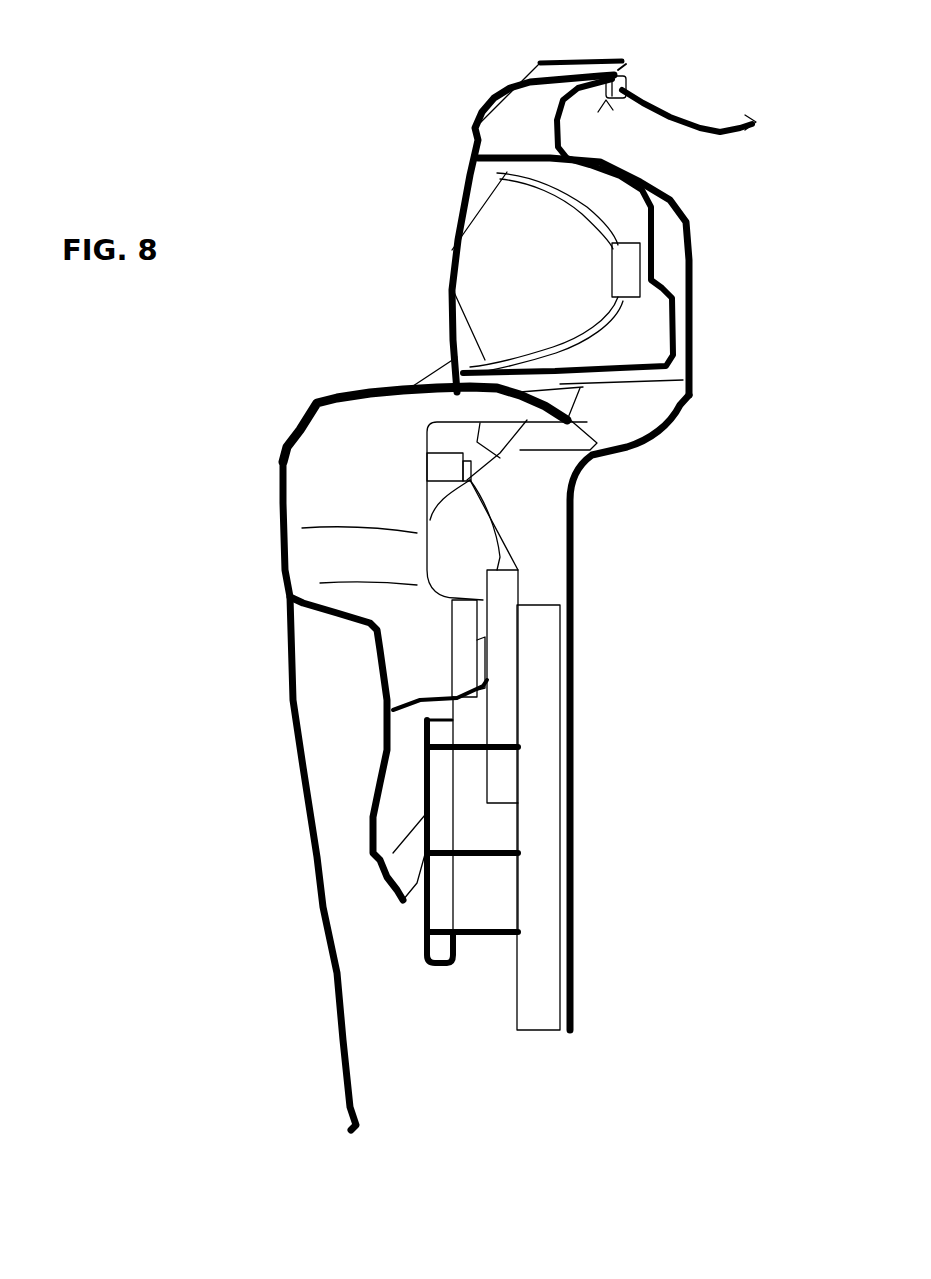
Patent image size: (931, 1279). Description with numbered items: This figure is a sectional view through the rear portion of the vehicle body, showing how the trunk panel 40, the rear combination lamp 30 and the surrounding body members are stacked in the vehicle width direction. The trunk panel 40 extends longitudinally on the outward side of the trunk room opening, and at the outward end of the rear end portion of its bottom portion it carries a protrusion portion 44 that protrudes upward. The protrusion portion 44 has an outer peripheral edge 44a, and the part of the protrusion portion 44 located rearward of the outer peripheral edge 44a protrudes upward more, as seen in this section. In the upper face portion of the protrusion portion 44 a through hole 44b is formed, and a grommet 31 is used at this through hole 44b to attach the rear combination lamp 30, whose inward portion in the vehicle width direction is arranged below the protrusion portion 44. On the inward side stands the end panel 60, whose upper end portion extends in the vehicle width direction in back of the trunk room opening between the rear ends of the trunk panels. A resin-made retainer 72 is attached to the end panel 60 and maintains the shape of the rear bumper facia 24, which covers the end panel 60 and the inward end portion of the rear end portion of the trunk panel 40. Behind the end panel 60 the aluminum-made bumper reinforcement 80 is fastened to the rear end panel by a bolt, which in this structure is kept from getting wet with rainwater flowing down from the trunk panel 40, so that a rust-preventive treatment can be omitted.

The rear bumper facia 24 is at (333, 1026).
The rear combination lamp 30 is at (452, 250).
The grommet 31 is at (610, 106).
The trunk panel 40 is at (703, 134).
The protrusion portion 44 is at (634, 95).
The outer peripheral edge 44a is at (706, 130).
The through hole 44b is at (620, 74).
The end panel 60 is at (578, 995).
The retainer 72 is at (398, 641).
The bumper reinforcement 80 is at (428, 936).